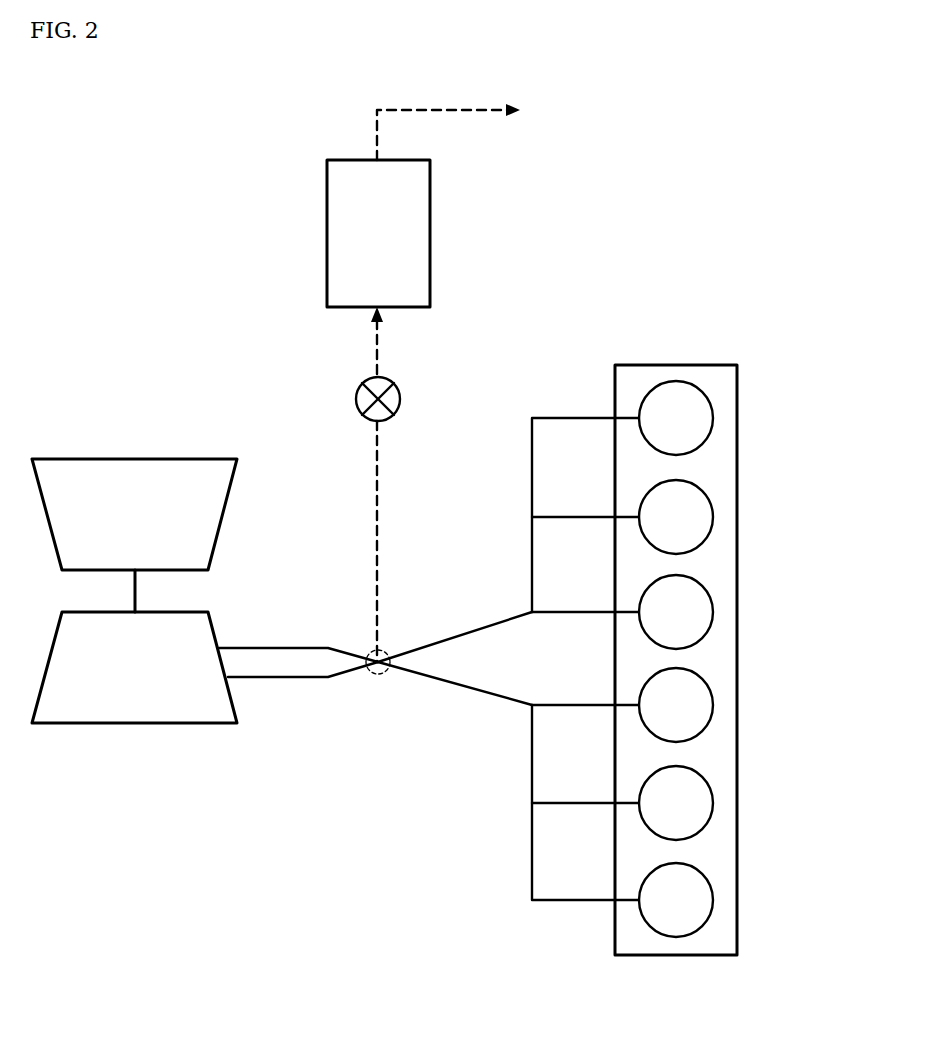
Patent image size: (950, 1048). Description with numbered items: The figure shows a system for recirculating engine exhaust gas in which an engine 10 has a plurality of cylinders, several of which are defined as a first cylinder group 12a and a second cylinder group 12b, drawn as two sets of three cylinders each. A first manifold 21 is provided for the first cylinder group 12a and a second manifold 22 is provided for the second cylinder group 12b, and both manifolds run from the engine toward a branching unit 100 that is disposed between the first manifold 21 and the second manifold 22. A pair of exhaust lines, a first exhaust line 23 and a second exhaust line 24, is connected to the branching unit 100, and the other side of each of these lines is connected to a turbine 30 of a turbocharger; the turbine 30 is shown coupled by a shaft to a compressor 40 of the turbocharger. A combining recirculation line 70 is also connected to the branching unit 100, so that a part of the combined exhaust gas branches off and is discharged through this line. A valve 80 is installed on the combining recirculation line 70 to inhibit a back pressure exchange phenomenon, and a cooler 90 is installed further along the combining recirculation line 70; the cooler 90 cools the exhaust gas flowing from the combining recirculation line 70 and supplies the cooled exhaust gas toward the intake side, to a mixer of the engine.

The engine 10 is at (695, 365).
The first cylinder group 12a is at (685, 427).
The second cylinder group 12b is at (685, 714).
The first manifold 21 is at (433, 642).
The second manifold 22 is at (455, 687).
The first exhaust line 23 is at (270, 648).
The second exhaust line 24 is at (280, 677).
The turbine 30 is at (133, 723).
The compressor 40 is at (133, 459).
The combining recirculation line 70 is at (376, 541).
The valve 80 is at (357, 395).
The cooler 90 is at (327, 233).
The branching unit 100 is at (378, 675).